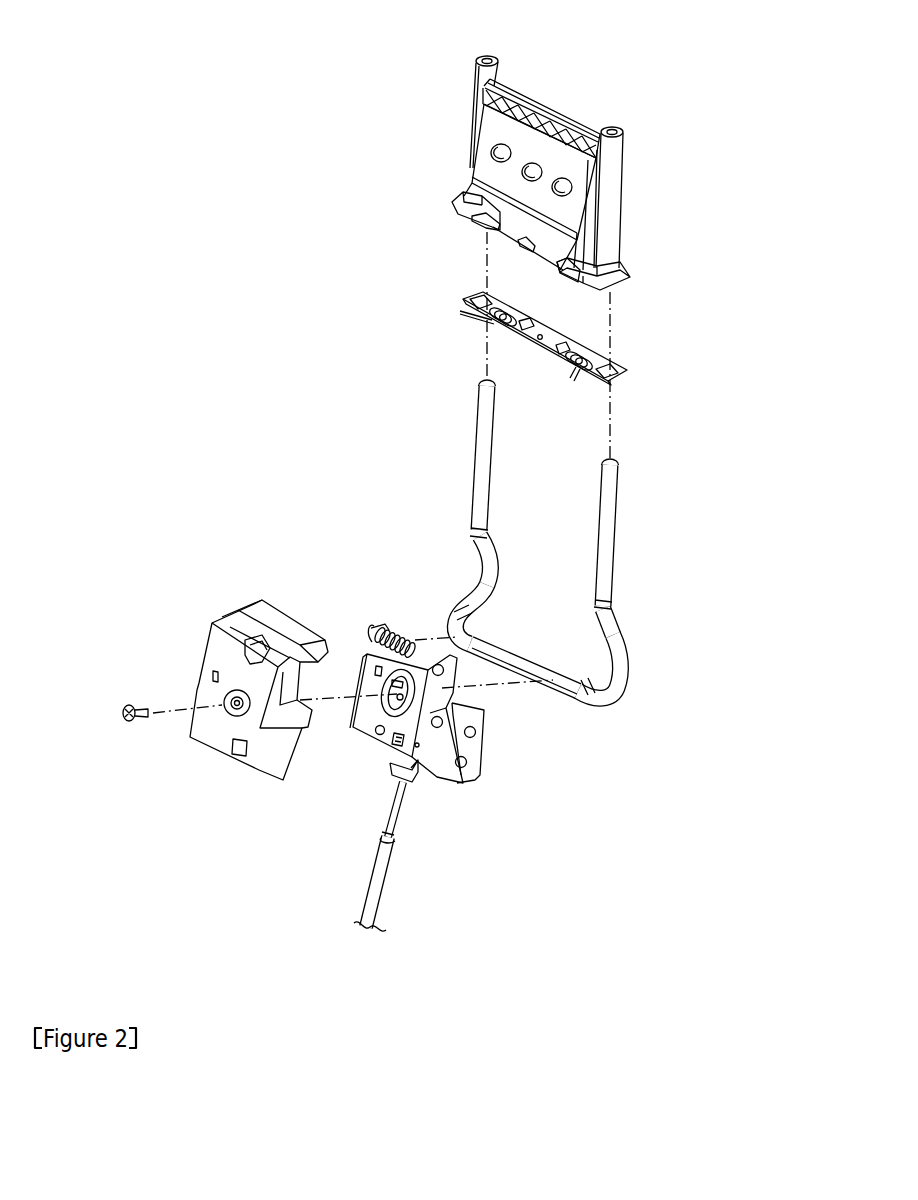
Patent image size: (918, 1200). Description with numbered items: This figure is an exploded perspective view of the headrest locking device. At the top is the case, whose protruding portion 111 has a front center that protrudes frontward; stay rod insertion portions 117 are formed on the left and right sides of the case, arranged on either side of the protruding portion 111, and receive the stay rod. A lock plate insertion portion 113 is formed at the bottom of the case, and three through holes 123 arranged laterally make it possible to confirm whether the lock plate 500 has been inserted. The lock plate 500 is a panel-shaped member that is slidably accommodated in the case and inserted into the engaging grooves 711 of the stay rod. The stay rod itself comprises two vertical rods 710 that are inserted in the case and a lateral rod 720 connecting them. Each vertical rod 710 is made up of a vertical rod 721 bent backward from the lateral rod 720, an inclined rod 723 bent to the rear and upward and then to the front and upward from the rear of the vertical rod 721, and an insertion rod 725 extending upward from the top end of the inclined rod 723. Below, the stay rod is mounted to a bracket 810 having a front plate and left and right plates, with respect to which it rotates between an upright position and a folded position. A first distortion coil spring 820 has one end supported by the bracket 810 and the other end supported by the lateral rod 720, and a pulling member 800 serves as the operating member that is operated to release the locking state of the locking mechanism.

The protruding portion 111 is at (490, 162).
The lock plate insertion portion 113 is at (565, 158).
The stay rod insertion portions 117 is at (603, 124).
The through holes 123 is at (560, 268).
The lock plate 500 is at (633, 365).
The vertical rods 710 is at (606, 617).
The engaging grooves 711 is at (597, 600).
The lateral rod 720 is at (523, 670).
The vertical rod 721 is at (597, 706).
The inclined rod 723 is at (624, 655).
The insertion rod 725 is at (612, 553).
The pulling member 800 is at (383, 875).
The bracket 810 is at (378, 686).
The first distortion coil spring 820 is at (395, 630).